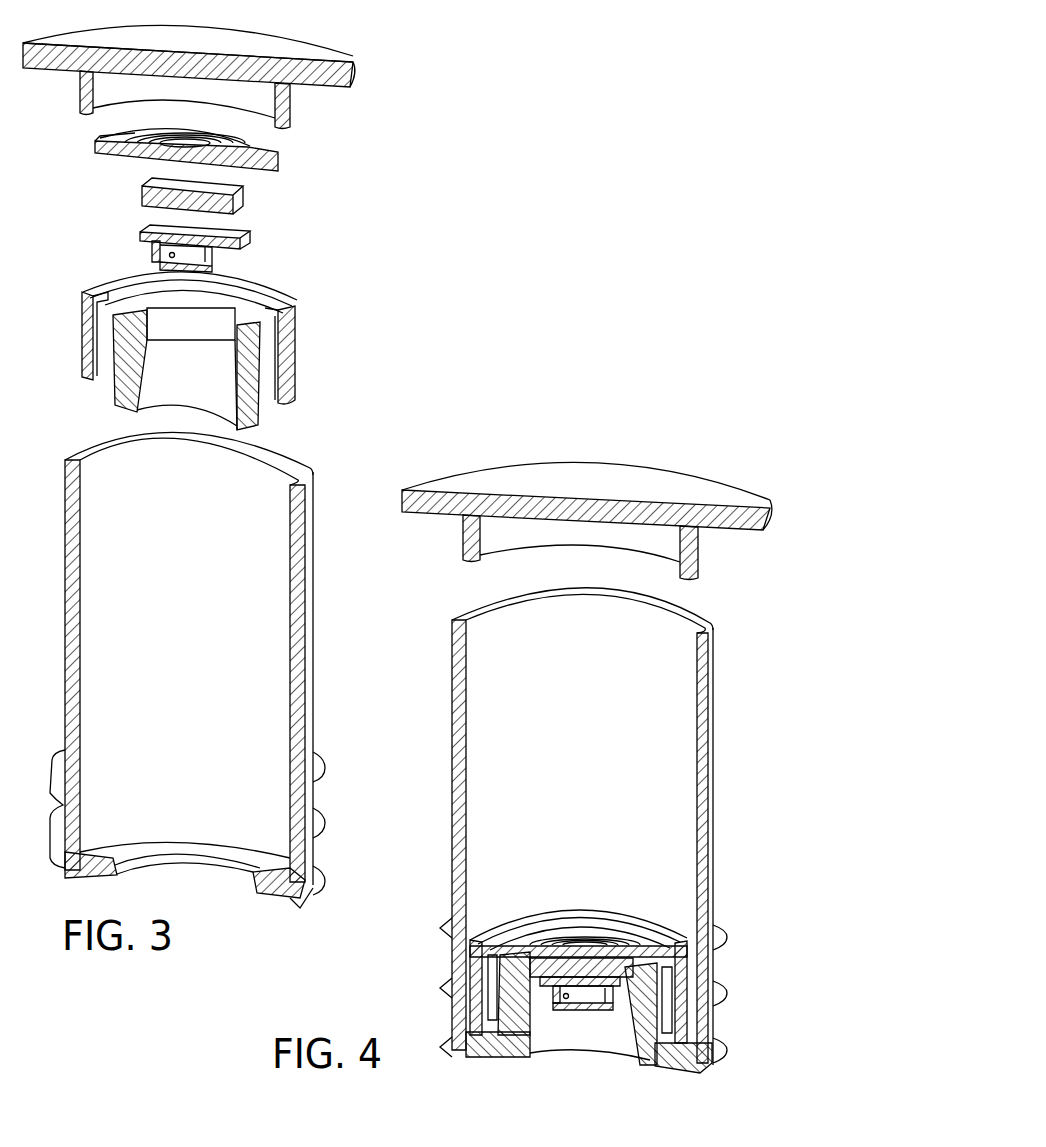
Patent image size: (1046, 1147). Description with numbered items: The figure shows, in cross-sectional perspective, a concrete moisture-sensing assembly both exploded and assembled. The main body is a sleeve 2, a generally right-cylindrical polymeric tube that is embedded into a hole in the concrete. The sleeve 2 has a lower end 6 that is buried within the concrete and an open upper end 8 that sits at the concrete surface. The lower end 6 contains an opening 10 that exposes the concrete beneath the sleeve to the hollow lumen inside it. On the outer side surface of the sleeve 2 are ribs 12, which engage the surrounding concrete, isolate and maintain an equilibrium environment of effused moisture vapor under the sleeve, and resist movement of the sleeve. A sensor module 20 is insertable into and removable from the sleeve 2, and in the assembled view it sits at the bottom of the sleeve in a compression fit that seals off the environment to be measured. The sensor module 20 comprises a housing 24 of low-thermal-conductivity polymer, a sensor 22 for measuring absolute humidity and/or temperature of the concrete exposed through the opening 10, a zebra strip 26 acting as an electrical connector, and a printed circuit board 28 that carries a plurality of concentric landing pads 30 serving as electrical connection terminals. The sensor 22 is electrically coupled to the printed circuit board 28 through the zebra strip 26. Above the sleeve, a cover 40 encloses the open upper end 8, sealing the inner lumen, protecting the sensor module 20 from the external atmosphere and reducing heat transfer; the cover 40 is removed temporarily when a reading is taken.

In FIG. 3, the sleeve 2 is at (165, 682).
In FIG. 4, the sleeve 2 is at (617, 845).
In FIG. 3, the lower end 6 is at (257, 893).
In FIG. 4, the lower end 6 is at (492, 1053).
In FIG. 3, the open upper end 8 is at (90, 447).
In FIG. 4, the open upper end 8 is at (697, 612).
In FIG. 3, the opening 10 is at (213, 860).
In FIG. 3, the ribs 12 is at (55, 757).
In FIG. 4, the ribs 12 is at (716, 1062).
In FIG. 3, the sensor module 20 is at (77, 397).
In FIG. 4, the sensor module 20 is at (570, 885).
In FIG. 3, the sensor 22 is at (240, 246).
In FIG. 4, the sensor 22 is at (586, 1012).
In FIG. 3, the housing 24 is at (295, 345).
In FIG. 4, the housing 24 is at (642, 1067).
In FIG. 3, the zebra strip 26 is at (243, 201).
In FIG. 4, the zebra strip 26 is at (576, 985).
In FIG. 3, the printed circuit board 28 is at (280, 162).
In FIG. 4, the printed circuit board 28 is at (507, 945).
In FIG. 3, the concentric landing pads 30 is at (250, 147).
In FIG. 4, the concentric landing pads 30 is at (638, 948).
In FIG. 3, the cover 40 is at (343, 55).
In FIG. 4, the cover 40 is at (600, 478).